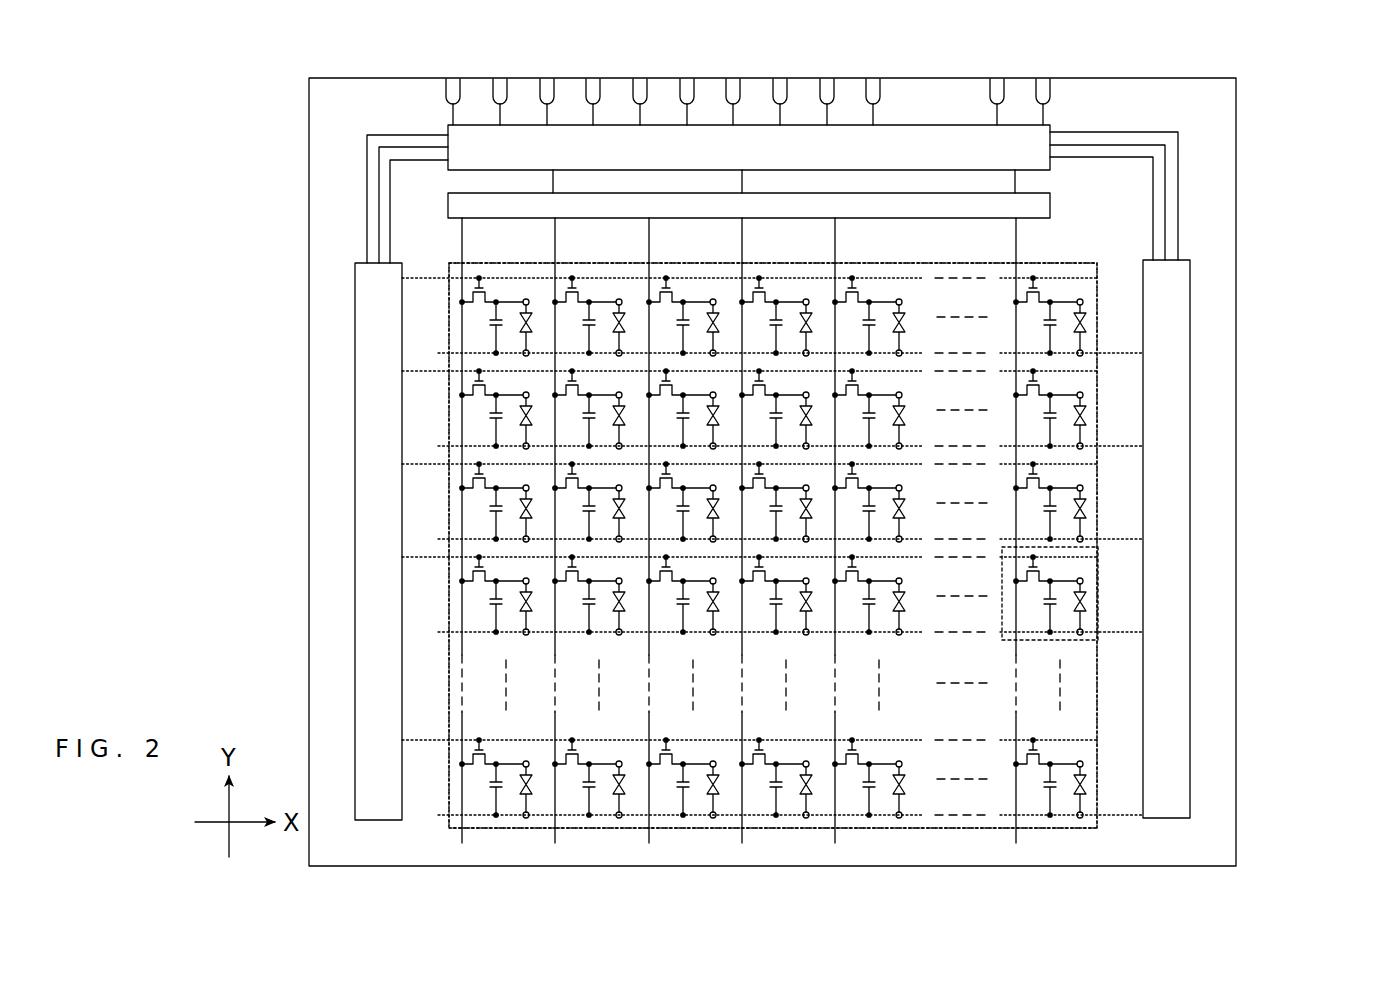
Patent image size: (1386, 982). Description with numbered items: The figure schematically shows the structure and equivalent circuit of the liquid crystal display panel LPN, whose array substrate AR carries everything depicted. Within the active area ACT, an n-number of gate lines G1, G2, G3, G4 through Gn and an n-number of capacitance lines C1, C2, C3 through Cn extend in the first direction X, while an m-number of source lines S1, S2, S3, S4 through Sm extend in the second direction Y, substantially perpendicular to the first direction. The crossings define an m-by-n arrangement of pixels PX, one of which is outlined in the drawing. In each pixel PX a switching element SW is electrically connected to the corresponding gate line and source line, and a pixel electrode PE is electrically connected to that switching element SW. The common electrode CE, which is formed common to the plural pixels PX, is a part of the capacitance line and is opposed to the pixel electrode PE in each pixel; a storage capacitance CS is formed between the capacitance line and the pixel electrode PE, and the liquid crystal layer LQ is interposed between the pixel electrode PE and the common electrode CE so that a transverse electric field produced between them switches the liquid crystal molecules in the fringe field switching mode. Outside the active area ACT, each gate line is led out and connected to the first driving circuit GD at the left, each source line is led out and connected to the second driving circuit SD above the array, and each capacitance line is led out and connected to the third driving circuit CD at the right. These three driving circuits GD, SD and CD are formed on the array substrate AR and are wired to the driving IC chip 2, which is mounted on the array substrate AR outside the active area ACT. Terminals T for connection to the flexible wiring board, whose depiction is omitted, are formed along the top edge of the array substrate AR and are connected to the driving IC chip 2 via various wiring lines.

The liquid crystal display panel LPN is at (1284, 78).
The array substrate AR is at (1216, 213).
The active area ACT is at (1100, 385).
The terminals T is at (1043, 80).
The driving IC chip 2 is at (1052, 126).
The second driving circuit SD is at (1052, 206).
The first driving circuit GD is at (355, 672).
The third driving circuit CD is at (1192, 313).
The source line S1 is at (465, 243).
The source line S2 is at (558, 243).
The source line S3 is at (652, 243).
The source line S4 is at (745, 243).
The source line Sm is at (1019, 245).
The gate line G1 is at (418, 277).
The gate line G2 is at (418, 370).
The gate line G3 is at (418, 463).
The gate line G4 is at (418, 556).
The gate line Gn is at (418, 739).
The capacitance line C1 is at (1115, 352).
The capacitance line C2 is at (1115, 445).
The capacitance line C3 is at (1115, 538).
The capacitance line Cn is at (1115, 814).
The pixel PX is at (1100, 641).
The switching element SW is at (1018, 573).
The storage capacitance CS is at (1040, 604).
The pixel electrode PE is at (1085, 580).
The liquid crystal layer LQ is at (1087, 600).
The common electrode CE is at (1084, 632).